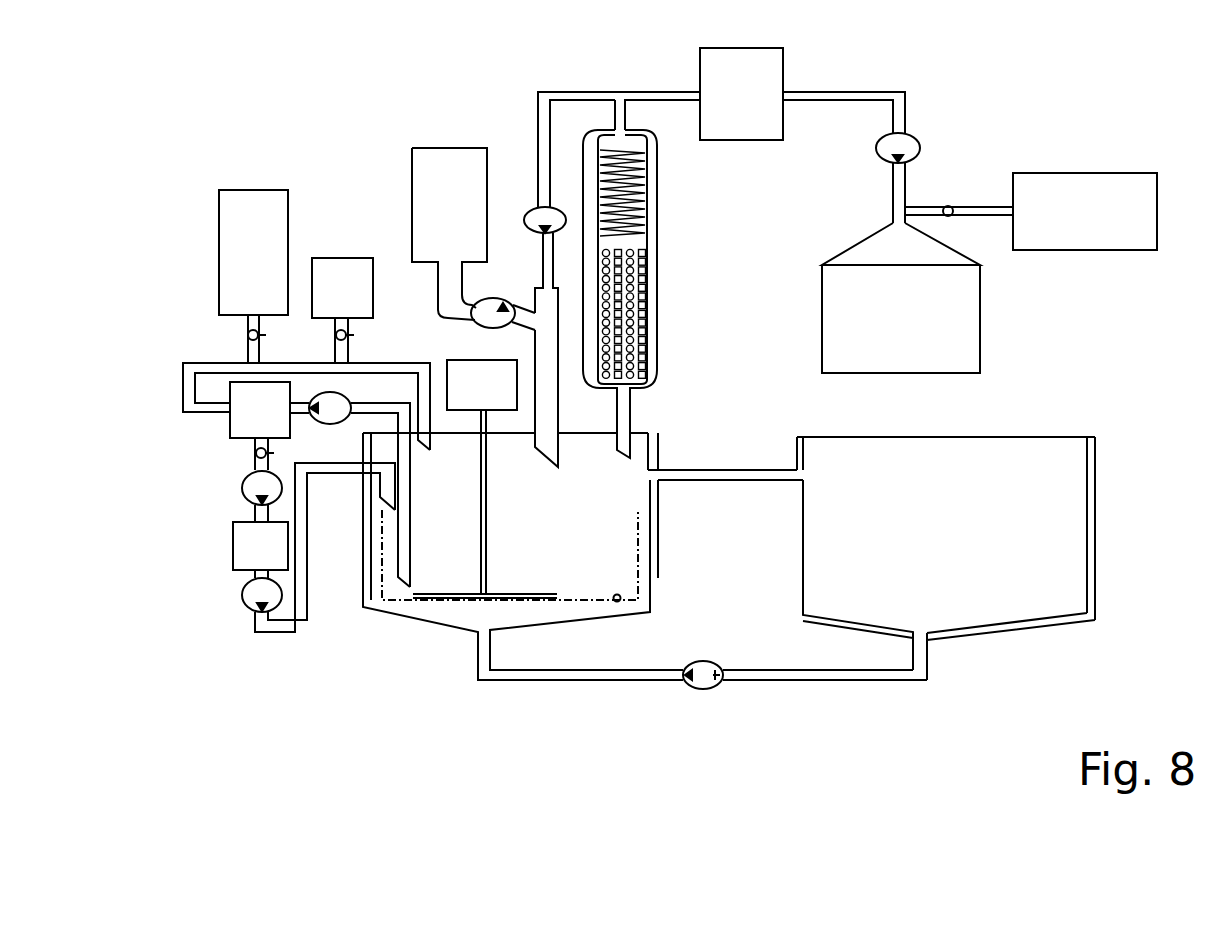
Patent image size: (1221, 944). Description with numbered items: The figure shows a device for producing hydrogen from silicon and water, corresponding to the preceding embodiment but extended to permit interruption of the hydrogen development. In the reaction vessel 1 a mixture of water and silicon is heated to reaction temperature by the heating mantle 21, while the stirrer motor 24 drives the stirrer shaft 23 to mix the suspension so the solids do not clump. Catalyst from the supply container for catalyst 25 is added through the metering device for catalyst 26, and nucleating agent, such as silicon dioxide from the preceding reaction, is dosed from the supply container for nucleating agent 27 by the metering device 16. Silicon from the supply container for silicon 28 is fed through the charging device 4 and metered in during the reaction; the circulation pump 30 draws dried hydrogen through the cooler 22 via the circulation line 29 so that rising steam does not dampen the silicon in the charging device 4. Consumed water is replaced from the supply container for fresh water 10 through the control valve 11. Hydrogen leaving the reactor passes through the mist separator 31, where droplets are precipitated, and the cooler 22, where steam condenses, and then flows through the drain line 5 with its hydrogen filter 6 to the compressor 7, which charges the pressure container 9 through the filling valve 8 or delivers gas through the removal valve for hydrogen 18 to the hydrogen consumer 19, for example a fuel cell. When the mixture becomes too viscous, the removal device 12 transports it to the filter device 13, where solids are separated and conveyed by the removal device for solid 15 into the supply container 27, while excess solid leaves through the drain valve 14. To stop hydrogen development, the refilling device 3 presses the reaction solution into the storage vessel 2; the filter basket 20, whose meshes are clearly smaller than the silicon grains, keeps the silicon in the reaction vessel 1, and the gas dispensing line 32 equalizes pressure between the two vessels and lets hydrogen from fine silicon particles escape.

The reaction vessel 1 is at (617, 602).
The storage vessel 2 is at (1048, 618).
The refilling device 3 is at (703, 689).
The charging device 4 is at (500, 300).
The drain line 5 is at (660, 92).
The hydrogen filter 6 is at (783, 72).
The compressor 7 is at (915, 135).
The filling valve 8 is at (912, 195).
The pressure container 9 is at (952, 373).
The supply container for fresh water 10 is at (252, 190).
The control valve 11 is at (243, 335).
The removal device 12 is at (335, 426).
The filter device 13 is at (226, 433).
The drain valve 14 is at (240, 488).
The removal device for solid 15 is at (250, 500).
The metering device for nucleating agent 16 is at (248, 598).
The removal valve for hydrogen 18 is at (958, 205).
The hydrogen consumer 19 is at (1098, 250).
The filter basket 20 is at (587, 602).
The heating mantle 21 is at (658, 578).
The cooler 22 is at (657, 228).
The stirrer shaft 23 is at (518, 597).
The stirrer motor 24 is at (470, 358).
The supply container for catalyst 25 is at (345, 258).
The metering device for catalyst 26 is at (330, 333).
The supply container for nucleating agent 27 is at (238, 567).
The supply container for silicon 28 is at (420, 148).
The circulation line 29 is at (568, 92).
The circulation pump 30 is at (528, 205).
The mist separator 31 is at (657, 333).
The gas dispensing line 32 is at (768, 470).